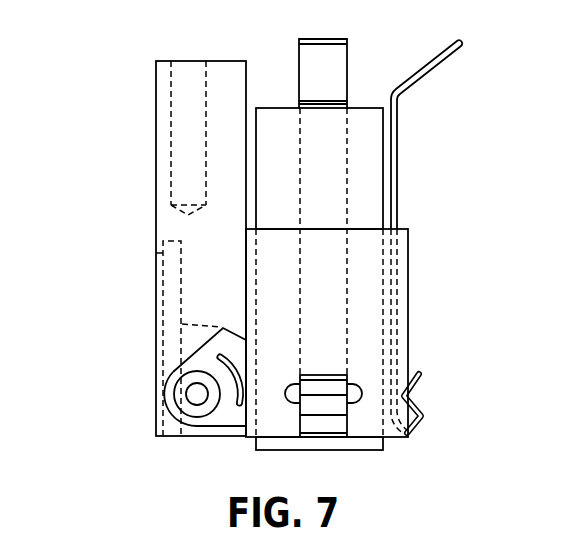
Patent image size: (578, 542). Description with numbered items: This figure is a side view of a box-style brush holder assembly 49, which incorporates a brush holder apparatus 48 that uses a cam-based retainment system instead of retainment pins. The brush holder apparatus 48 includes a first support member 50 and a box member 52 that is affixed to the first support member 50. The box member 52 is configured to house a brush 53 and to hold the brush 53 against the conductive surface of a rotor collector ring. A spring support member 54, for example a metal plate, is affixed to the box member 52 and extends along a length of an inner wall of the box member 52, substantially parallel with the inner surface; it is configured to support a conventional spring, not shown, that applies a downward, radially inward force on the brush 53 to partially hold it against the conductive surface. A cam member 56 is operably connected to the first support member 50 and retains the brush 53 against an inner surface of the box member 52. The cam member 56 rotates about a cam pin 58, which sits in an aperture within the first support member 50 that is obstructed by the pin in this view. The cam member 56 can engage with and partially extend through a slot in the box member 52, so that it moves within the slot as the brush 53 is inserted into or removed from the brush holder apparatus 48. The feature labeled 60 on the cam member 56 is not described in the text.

The brush holder apparatus 48 is at (108, 293).
The brush holder assembly 49 is at (514, 111).
The first support member 50 is at (156, 193).
The box member 52 is at (392, 311).
The brush 53 is at (263, 184).
The spring support member 54 is at (419, 77).
The cam member 56 is at (223, 418).
The cam pin 58 is at (197, 395).
The cam surface 60 is at (200, 359).